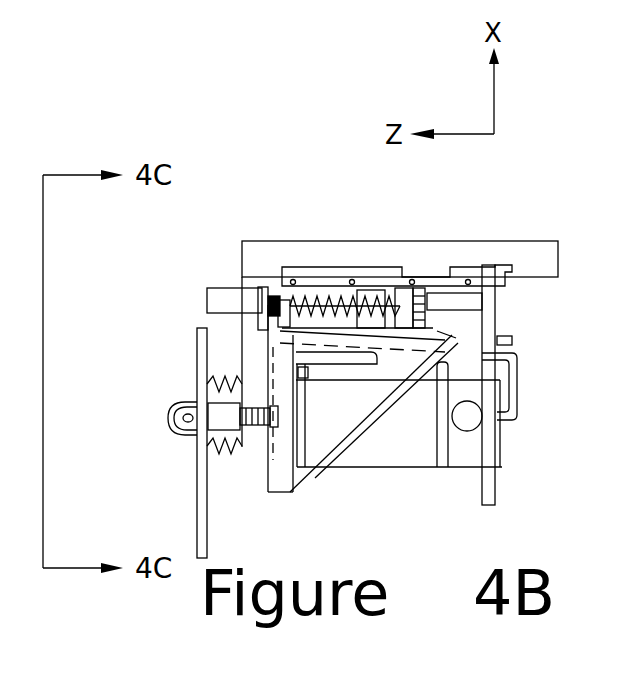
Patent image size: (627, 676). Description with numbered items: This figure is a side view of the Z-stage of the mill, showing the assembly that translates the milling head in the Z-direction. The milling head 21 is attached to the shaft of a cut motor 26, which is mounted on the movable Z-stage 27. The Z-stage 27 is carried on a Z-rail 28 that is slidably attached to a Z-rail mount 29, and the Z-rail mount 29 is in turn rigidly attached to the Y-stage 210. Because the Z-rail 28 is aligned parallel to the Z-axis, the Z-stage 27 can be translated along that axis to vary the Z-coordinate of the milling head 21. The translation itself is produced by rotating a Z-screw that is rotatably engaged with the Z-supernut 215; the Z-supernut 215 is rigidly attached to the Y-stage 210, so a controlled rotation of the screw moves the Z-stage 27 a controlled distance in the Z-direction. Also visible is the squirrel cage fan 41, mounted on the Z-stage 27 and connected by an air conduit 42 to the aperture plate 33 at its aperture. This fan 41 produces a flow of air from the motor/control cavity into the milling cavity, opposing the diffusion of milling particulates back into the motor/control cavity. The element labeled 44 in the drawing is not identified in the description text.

The squirrel cage fan 41 is at (552, 251).
The Y-stage 210 is at (302, 268).
The Z-supernut 215 is at (372, 297).
The air conduit 42 is at (256, 290).
The Z-rail mount 29 is at (208, 300).
The Z-rail 28 is at (470, 302).
The Z-stage 27 is at (328, 443).
The cut motor 26 is at (425, 465).
The aperture plate 33 is at (197, 485).
The milling head 21 is at (177, 402).
The spring 44 is at (224, 445).